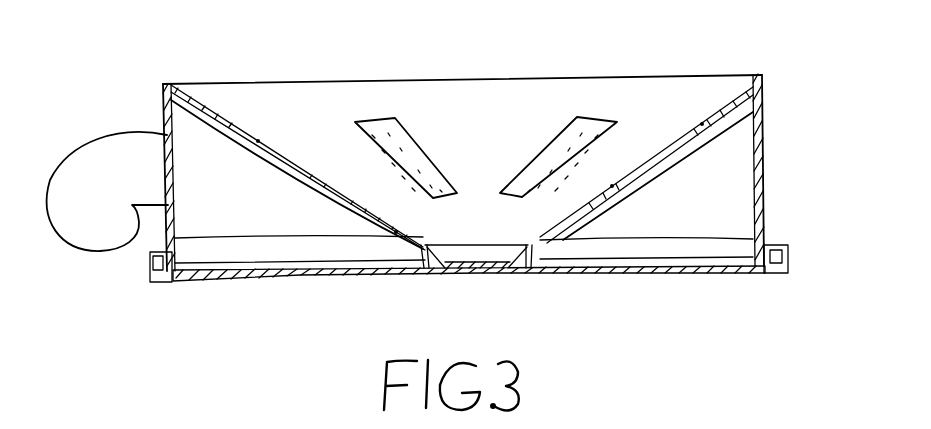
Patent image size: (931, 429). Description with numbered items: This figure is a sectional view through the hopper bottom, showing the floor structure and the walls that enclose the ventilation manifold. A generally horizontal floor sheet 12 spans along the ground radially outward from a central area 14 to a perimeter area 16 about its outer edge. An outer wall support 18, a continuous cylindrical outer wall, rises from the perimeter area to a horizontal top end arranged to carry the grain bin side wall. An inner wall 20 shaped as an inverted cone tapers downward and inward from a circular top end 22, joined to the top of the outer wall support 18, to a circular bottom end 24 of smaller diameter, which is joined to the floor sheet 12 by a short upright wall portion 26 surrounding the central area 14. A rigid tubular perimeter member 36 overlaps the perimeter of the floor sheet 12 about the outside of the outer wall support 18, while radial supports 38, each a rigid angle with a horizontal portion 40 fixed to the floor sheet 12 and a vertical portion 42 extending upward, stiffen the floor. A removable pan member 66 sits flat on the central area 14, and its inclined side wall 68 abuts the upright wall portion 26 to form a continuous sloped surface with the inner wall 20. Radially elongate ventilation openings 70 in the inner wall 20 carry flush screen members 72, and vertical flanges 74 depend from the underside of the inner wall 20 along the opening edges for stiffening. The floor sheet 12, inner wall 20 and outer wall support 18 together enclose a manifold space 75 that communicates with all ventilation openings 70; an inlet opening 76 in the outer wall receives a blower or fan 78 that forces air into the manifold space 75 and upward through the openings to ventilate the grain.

The floor sheet 12 is at (340, 275).
The central area 14 is at (481, 296).
The perimeter area 16 is at (186, 302).
The outer wall support 18 is at (765, 151).
The inner wall 20 is at (689, 98).
The top end of the inner wall 22 is at (556, 80).
The bottom end of the inner wall 24 is at (484, 243).
The upright wall portion 26 is at (537, 250).
The perimeter member 36 is at (787, 251).
The radial support 38 is at (731, 227).
The horizontal portion 40 is at (711, 268).
The vertical portion 42 is at (720, 248).
The pan member 66 is at (460, 272).
The side wall of the pan member 68 is at (436, 270).
The ventilation opening 70 is at (410, 135).
The screen member 72 is at (383, 133).
The vertical flange 74 is at (260, 158).
The manifold space 75 is at (287, 220).
The inlet opening 76 is at (165, 172).
The blower or fan 78 is at (80, 167).